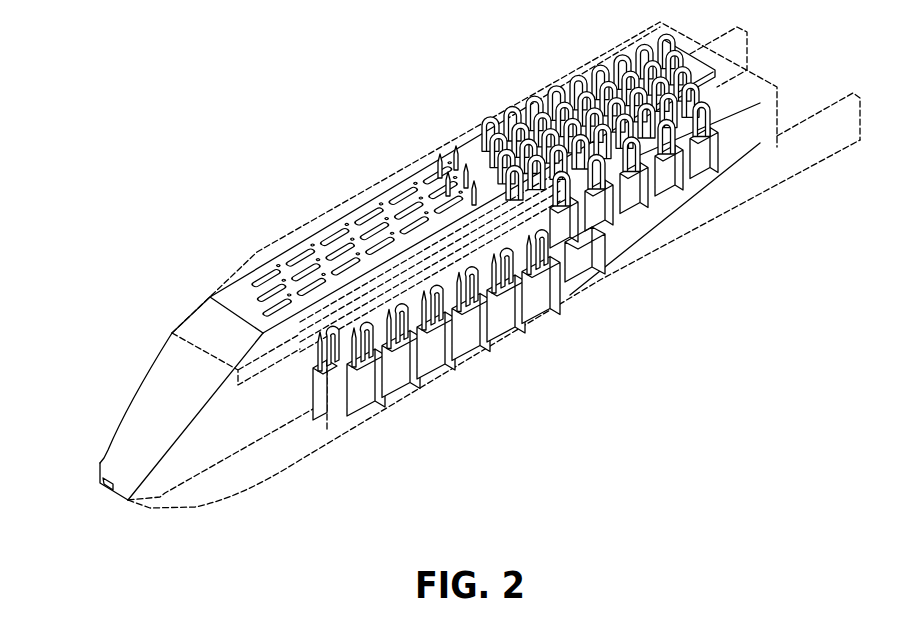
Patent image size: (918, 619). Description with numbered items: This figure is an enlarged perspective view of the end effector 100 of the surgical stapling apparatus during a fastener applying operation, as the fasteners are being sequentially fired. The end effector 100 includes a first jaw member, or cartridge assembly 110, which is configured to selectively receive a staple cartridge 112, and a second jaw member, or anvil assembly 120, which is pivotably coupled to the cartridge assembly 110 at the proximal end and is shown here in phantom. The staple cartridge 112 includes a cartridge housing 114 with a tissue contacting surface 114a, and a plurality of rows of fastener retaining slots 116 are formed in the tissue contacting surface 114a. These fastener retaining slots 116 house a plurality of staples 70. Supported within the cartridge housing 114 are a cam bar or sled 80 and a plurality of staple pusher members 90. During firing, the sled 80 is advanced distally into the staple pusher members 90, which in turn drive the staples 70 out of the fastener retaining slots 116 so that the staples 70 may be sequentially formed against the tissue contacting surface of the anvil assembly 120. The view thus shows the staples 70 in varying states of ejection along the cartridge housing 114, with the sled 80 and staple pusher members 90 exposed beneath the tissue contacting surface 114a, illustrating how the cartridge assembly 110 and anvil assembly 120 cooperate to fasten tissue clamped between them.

The end effector 100 is at (332, 66).
The cartridge assembly 110 is at (111, 455).
The staple cartridge 112 is at (207, 291).
The cartridge housing 114 is at (358, 232).
The tissue contacting surface 114a is at (367, 207).
The fastener retaining slots 116 is at (446, 170).
The anvil assembly 120 is at (255, 250).
The staples 70 is at (503, 305).
The sled 80 is at (590, 277).
The staple pusher members 90 is at (463, 347).